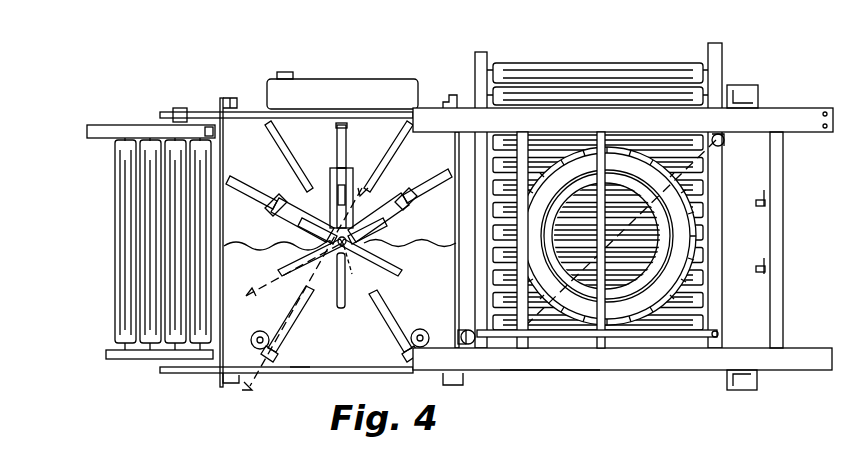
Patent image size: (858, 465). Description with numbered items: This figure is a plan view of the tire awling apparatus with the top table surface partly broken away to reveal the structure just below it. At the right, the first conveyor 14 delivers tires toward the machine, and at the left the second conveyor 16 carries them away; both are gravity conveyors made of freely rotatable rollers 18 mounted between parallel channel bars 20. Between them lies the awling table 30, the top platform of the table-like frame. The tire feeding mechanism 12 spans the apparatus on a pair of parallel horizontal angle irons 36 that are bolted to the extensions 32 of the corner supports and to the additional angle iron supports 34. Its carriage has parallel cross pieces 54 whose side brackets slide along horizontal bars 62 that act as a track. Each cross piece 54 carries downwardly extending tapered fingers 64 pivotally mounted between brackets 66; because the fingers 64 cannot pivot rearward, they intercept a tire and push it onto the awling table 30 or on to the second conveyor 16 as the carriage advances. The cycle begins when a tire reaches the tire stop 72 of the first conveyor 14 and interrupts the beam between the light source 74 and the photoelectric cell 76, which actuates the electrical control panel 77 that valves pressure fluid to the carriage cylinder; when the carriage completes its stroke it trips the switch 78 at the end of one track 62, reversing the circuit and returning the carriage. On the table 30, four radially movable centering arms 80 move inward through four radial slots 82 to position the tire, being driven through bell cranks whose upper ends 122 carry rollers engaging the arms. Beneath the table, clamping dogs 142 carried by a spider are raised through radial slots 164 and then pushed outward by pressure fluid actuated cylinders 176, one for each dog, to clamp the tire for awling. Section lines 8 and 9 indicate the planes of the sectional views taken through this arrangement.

The section line 8- 8 is at (366, 192).
The section line 9- 9 is at (352, 278).
The feeding mechanism 12 is at (625, 374).
The first conveyor 14 is at (724, 68).
The second conveyor 16 is at (108, 124).
The rollers 18 is at (117, 256).
The channel bars 20 is at (95, 138).
The awling table 30 is at (306, 372).
The extensions 32 is at (456, 96).
The angle iron supports 34 is at (745, 90).
The angle irons 36 is at (800, 110).
The cross pieces 54 is at (456, 207).
The bars 62 is at (220, 110).
The tapered fingers 64 is at (756, 212).
The brackets 66 is at (756, 203).
The tire stop 72 is at (712, 330).
The light source 74 is at (726, 138).
The photoelectric cell 76 is at (470, 345).
The electrical control panel 77 is at (330, 80).
The switch 78 is at (178, 108).
The centering arms 80 is at (252, 341).
The radial slots 82 is at (296, 312).
The upper ends of the bell cranks 122 is at (268, 128).
The clamping dogs 142 is at (295, 250).
The radial slots 164 is at (386, 265).
The pressure fluid actuated cylinders 176 is at (337, 140).